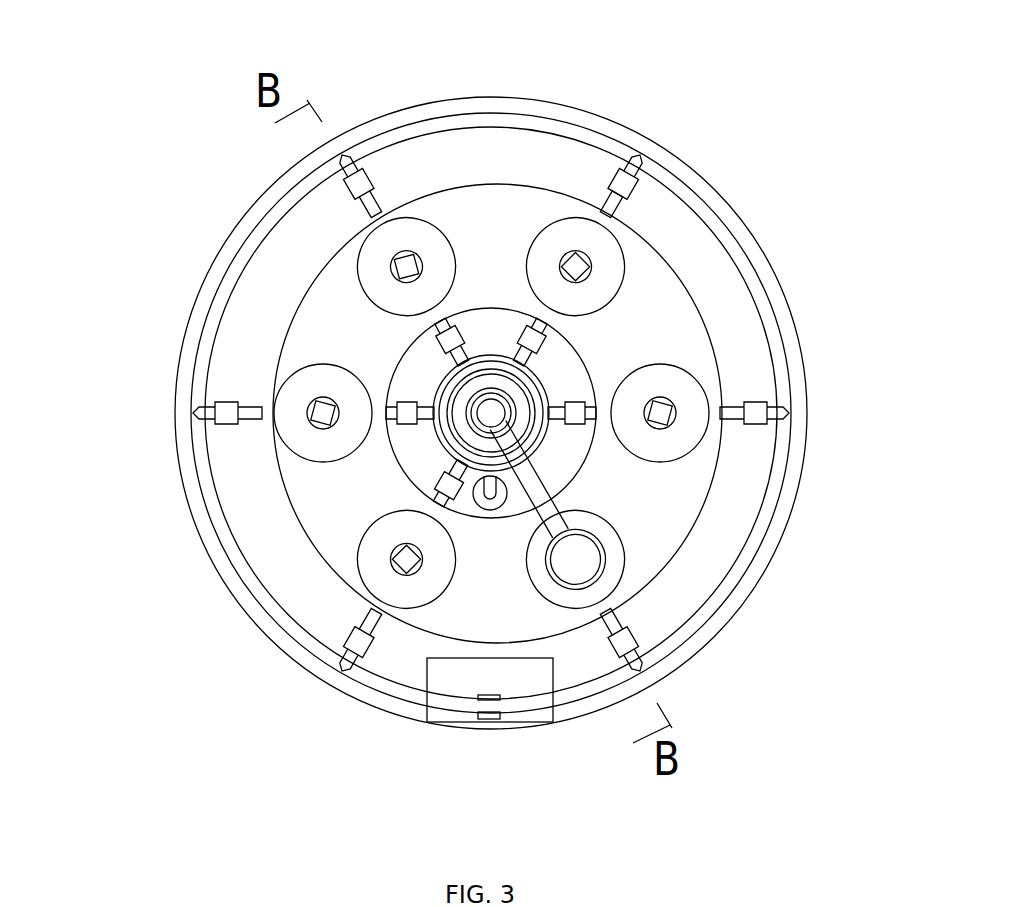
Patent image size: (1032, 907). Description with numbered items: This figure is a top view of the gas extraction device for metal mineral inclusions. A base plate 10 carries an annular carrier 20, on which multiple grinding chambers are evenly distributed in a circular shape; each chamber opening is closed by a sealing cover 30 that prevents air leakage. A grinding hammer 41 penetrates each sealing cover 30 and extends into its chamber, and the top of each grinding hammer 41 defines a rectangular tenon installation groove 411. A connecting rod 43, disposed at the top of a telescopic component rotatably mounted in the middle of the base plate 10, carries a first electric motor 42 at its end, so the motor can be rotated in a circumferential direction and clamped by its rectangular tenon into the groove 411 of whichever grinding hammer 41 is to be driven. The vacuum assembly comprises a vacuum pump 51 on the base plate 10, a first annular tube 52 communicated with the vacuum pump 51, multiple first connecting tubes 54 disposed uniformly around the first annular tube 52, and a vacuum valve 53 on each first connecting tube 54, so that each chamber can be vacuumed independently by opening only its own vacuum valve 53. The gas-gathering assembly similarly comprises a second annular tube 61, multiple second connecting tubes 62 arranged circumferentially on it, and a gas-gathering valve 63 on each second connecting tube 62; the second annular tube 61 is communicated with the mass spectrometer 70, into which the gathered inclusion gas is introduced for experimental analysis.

The base plate 10 is at (255, 290).
The annular carrier 20 is at (312, 508).
The sealing cover 30 is at (377, 570).
The grinding hammer 41 is at (204, 449).
The rectangular tenon installation groove 411 is at (312, 428).
The first electric motor 42 is at (605, 560).
The connecting rod 43 is at (552, 507).
The vacuum pump 51 is at (488, 503).
The first annular tube 52 is at (537, 388).
The vacuum valve 53 is at (572, 412).
The first connecting tube 54 is at (508, 333).
The second annular tube 61 is at (670, 180).
The second connecting tube 62 is at (610, 203).
The gas-gathering valve 63 is at (627, 167).
The mass spectrometer 70 is at (527, 688).